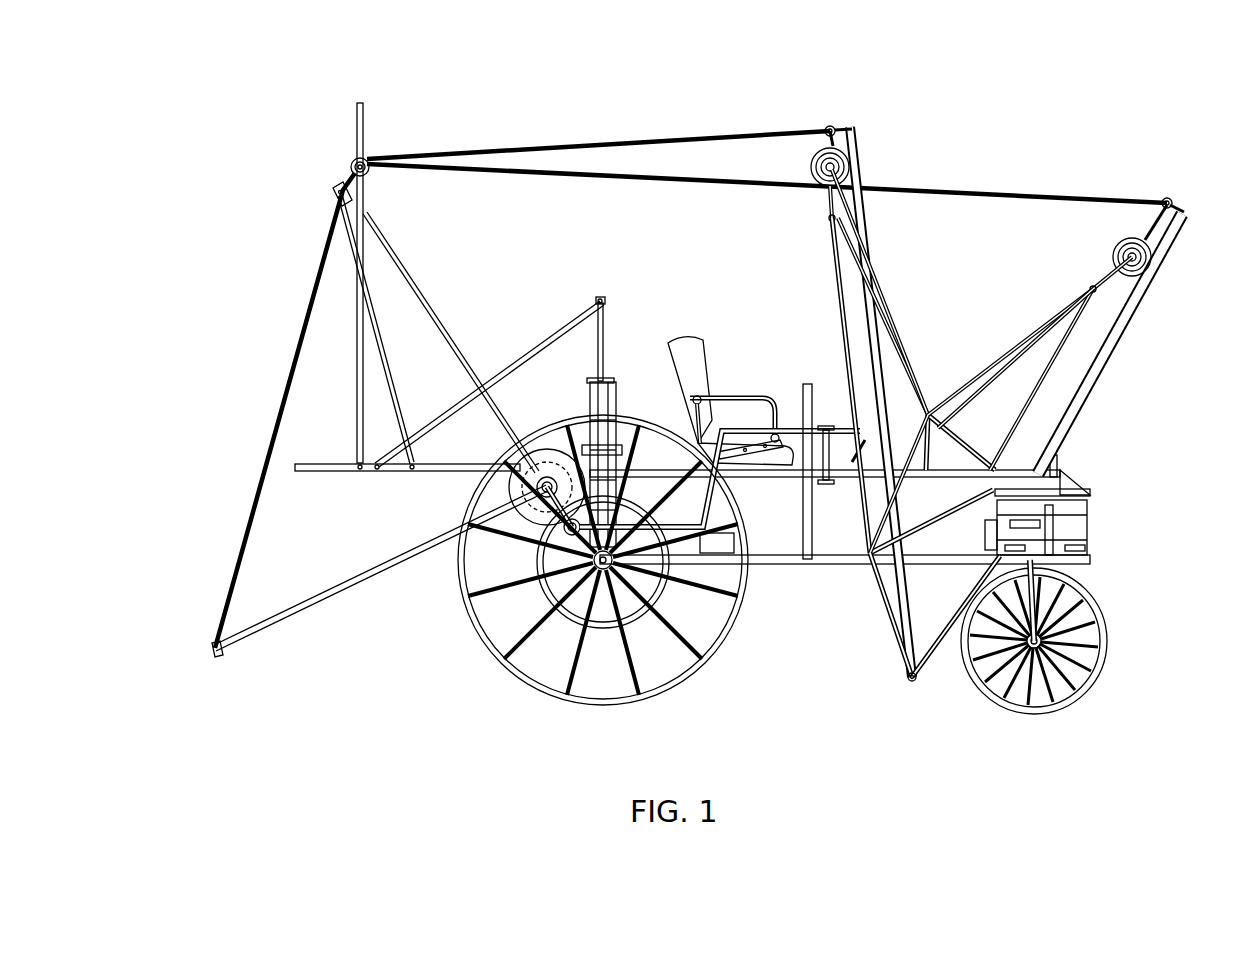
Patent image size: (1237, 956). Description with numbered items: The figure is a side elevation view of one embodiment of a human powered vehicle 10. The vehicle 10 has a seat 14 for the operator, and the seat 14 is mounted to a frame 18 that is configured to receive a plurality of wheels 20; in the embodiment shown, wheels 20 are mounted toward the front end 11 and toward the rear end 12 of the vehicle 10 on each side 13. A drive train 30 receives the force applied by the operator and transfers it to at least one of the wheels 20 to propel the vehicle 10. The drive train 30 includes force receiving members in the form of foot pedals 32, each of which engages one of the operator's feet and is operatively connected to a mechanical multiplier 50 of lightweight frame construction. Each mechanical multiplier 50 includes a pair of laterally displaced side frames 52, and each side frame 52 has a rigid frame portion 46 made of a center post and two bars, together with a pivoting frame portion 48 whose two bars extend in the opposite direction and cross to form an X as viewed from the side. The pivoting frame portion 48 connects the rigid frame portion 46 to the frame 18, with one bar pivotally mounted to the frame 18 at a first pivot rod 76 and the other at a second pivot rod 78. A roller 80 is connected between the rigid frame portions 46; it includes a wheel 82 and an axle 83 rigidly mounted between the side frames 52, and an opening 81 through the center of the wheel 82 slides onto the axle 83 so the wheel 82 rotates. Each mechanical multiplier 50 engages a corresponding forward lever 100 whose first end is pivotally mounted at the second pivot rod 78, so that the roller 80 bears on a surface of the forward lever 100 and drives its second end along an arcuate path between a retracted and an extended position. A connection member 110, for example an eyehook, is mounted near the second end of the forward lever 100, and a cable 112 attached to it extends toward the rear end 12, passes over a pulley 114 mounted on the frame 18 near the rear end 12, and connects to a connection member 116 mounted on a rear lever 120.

The human powered vehicle 10 is at (960, 116).
The front end 11 is at (1110, 505).
The rear end 12 is at (210, 492).
The side 13 is at (857, 578).
The seat 14 is at (688, 345).
The frame 18 is at (808, 578).
The wheel 20 is at (480, 630).
The drive train 30 is at (828, 262).
The foot pedal 32 is at (822, 428).
The rigid frame portion 46 is at (890, 300).
The pivoting frame portion 48 is at (870, 535).
The mechanical multiplier 50 is at (905, 338).
The side frame 52 is at (920, 350).
The first pivot rod 76 is at (878, 590).
The second pivot rod 78 is at (918, 680).
The roller 80 is at (810, 178).
The opening 81 is at (843, 160).
The wheel 82 is at (842, 144).
The axle 83 is at (838, 165).
The forward lever 100 is at (878, 246).
The connection member 110 is at (833, 124).
The cable 112 is at (352, 172).
The pulley 114 is at (372, 177).
The connection member 116 is at (218, 656).
The rear lever 120 is at (418, 283).